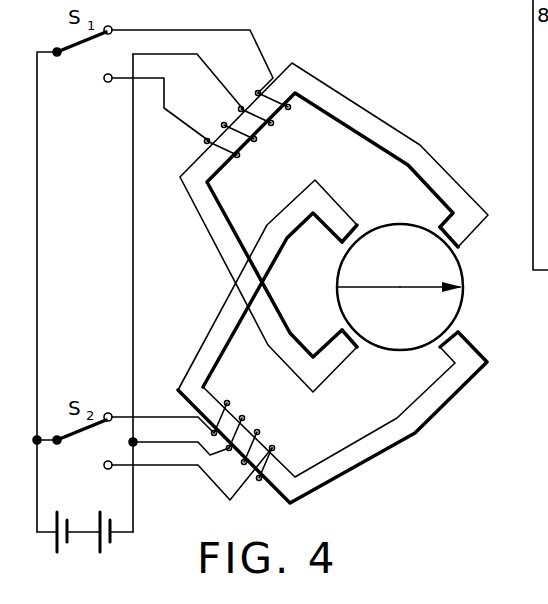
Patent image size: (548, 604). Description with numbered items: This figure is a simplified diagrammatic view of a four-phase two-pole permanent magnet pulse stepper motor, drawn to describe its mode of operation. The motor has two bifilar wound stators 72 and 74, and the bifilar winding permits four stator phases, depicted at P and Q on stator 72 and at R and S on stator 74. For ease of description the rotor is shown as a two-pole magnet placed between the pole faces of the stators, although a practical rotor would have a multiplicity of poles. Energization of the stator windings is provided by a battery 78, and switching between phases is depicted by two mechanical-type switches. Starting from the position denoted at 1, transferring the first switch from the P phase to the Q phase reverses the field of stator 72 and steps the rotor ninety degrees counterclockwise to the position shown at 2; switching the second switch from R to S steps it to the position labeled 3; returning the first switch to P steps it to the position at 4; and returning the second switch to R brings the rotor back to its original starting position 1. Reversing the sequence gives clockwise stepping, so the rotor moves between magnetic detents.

The bifilar wound stator 72 is at (359, 100).
The bifilar wound stator 74 is at (375, 459).
The battery 78 is at (117, 538).
The rotor starting position 1 is at (440, 287).
The rotor position 2 is at (400, 224).
The rotor position 3 is at (359, 287).
The rotor position 4 is at (400, 352).